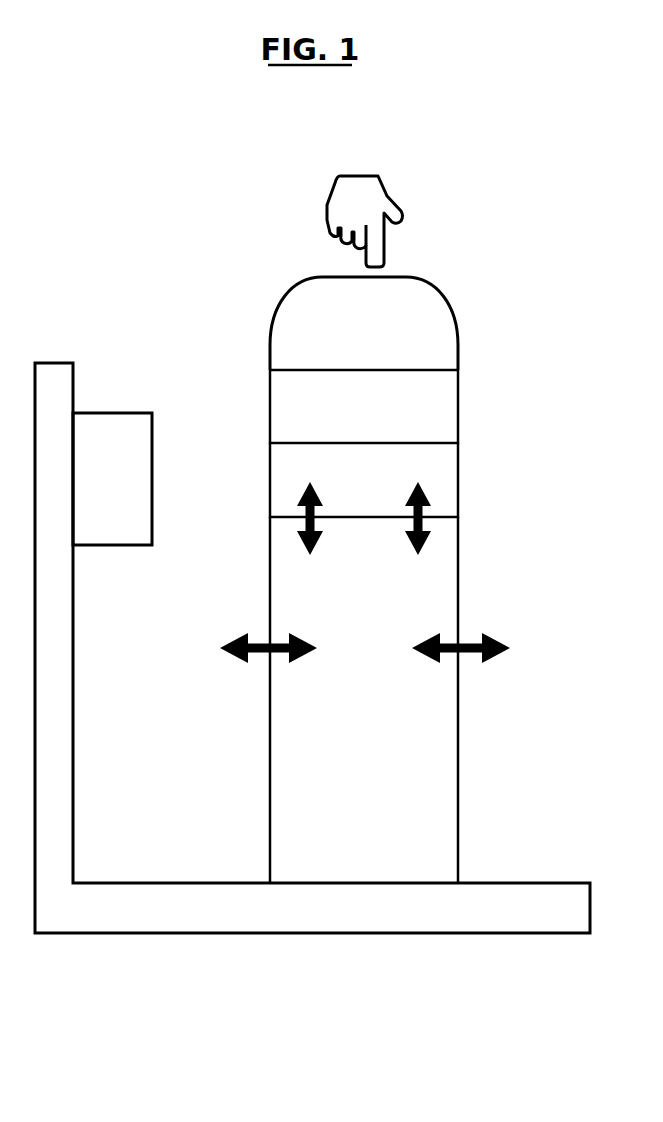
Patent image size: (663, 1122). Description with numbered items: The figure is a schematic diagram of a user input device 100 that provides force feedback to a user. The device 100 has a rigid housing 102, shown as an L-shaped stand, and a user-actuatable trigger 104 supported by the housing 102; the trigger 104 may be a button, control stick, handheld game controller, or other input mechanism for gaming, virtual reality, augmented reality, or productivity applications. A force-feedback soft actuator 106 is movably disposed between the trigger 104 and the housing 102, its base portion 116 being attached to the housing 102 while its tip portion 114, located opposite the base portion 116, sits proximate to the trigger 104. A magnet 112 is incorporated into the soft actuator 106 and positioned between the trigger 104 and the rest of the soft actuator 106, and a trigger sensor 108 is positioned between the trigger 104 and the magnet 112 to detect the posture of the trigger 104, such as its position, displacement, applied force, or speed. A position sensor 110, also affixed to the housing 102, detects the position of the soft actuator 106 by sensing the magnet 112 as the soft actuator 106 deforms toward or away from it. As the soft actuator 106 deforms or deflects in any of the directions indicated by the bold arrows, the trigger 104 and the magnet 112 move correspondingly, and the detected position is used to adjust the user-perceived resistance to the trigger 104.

The user input device 100 is at (112, 218).
The rigid housing 102 is at (182, 933).
The user-actuatable trigger 104 is at (364, 273).
The force-feedback soft actuator 106 is at (364, 700).
The trigger sensor 108 is at (364, 406).
The position sensor 110 is at (112, 479).
The magnet 112 is at (364, 480).
The tip portion 114 is at (492, 507).
The base portion 116 is at (495, 859).